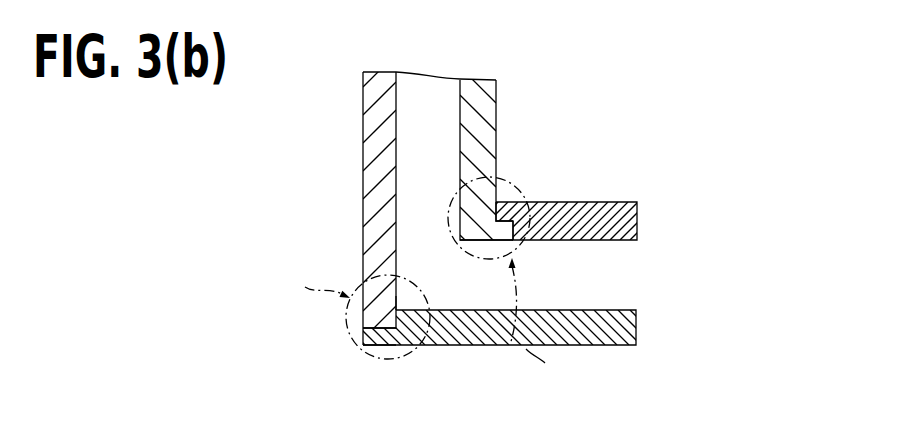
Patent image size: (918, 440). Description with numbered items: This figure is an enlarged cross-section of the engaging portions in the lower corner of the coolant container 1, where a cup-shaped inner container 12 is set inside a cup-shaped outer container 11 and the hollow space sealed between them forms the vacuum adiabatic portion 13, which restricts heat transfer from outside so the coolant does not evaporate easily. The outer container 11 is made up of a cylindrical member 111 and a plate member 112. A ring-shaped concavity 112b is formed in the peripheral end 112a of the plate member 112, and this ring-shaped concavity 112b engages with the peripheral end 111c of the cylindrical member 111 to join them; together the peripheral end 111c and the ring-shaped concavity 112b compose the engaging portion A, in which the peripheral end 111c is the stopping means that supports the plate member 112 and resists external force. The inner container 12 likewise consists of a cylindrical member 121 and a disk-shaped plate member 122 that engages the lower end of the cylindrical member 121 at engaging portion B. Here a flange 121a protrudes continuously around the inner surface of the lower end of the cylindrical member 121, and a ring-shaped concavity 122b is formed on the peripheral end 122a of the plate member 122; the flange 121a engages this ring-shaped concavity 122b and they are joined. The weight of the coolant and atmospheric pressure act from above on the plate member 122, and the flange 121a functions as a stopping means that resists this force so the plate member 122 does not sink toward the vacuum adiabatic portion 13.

The coolant container 1 is at (634, 62).
The outer container 11 is at (346, 117).
The inner container 12 is at (521, 104).
The vacuum adiabatic portion 13 is at (430, 72).
The cylindrical member 111 is at (390, 70).
The peripheral end 111c is at (386, 305).
The plate member 112 is at (636, 322).
The peripheral end 112a is at (375, 338).
The ring-shaped concavity 112b is at (380, 328).
The cylindrical member 121 is at (488, 78).
The flange 121a is at (476, 243).
The plate member 122 is at (637, 216).
The peripheral end 122a is at (523, 197).
The ring-shaped concavity 122b is at (512, 243).